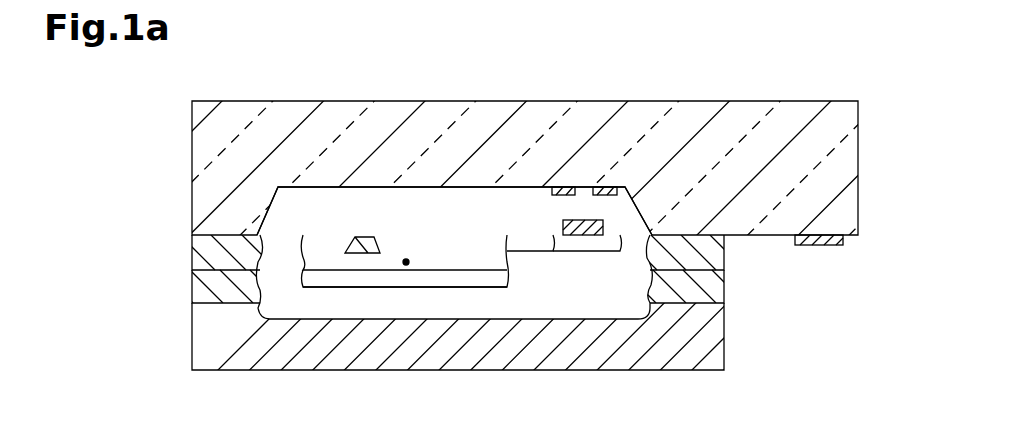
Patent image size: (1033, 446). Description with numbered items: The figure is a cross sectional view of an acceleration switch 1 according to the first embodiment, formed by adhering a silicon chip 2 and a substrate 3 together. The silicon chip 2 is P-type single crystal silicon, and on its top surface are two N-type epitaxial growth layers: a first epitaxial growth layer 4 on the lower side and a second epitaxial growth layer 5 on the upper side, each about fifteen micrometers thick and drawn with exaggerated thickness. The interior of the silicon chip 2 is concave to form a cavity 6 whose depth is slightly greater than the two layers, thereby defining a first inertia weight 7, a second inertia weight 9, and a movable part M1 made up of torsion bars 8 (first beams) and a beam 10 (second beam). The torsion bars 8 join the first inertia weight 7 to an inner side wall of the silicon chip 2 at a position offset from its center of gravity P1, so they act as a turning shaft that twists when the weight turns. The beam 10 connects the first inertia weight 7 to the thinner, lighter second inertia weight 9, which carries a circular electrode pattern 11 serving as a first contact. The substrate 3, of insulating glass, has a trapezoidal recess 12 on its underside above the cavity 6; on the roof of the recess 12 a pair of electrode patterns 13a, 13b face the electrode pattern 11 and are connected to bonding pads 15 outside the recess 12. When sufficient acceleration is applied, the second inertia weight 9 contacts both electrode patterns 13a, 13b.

The acceleration switch 1 is at (235, 74).
The silicon chip 2 is at (724, 357).
The substrate 3 is at (858, 153).
The first epitaxial growth layer 4 is at (724, 282).
The second epitaxial growth layer 5 is at (724, 248).
The cavity 6 is at (506, 323).
The first inertia weight 7 is at (436, 246).
The torsion bars 8 is at (360, 237).
The second inertia weight 9 is at (595, 255).
The beam 10 is at (527, 255).
The electrode pattern 11 is at (565, 221).
The recess 12 is at (280, 191).
The electrode pattern 13a is at (553, 187).
The electrode pattern 13b is at (603, 187).
The bonding pads 15 is at (829, 245).
The movable part M1 is at (322, 288).
The center of gravity P1 is at (406, 265).